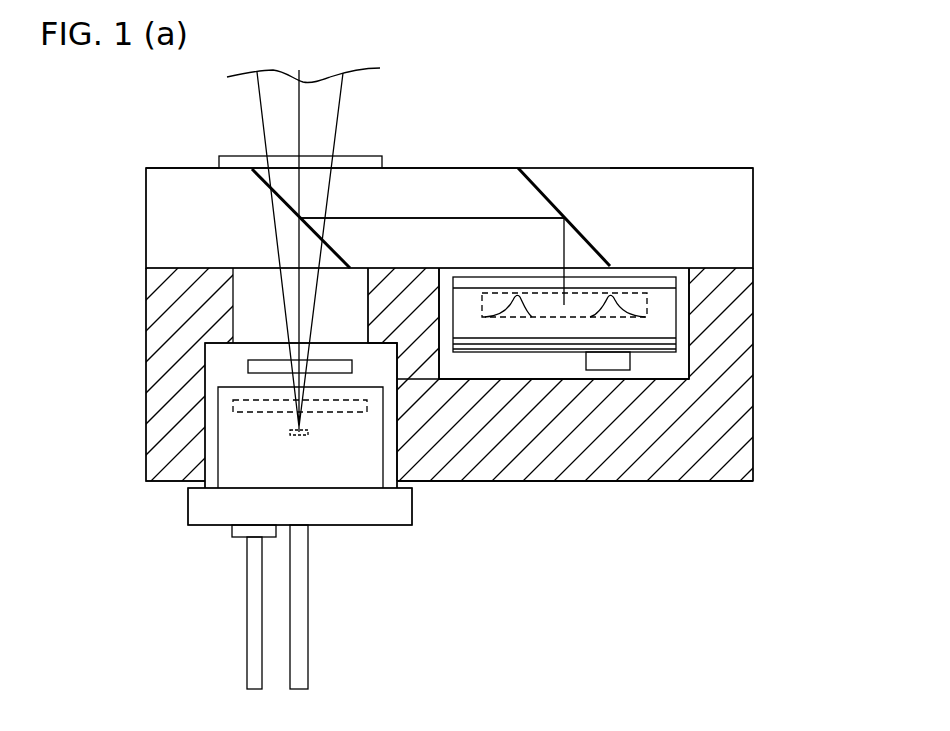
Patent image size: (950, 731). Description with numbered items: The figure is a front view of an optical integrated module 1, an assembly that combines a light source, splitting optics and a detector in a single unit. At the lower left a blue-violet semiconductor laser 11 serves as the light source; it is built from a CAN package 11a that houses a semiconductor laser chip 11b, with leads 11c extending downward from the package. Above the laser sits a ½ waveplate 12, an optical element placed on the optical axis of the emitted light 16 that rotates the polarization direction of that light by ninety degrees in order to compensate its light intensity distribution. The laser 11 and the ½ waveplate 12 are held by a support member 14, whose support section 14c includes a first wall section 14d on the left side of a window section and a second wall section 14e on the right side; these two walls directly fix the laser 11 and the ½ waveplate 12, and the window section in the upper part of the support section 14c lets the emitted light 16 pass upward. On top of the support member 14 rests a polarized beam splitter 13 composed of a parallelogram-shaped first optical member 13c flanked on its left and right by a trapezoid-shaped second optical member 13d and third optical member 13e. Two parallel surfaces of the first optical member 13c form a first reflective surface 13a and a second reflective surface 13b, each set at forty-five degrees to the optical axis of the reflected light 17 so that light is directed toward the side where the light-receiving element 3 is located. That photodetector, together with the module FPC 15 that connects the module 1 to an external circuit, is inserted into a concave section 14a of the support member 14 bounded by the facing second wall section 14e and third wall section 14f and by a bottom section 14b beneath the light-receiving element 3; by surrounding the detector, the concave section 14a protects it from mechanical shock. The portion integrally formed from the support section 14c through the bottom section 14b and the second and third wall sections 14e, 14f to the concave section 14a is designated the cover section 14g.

The optical integrated module 1 is at (709, 75).
The light-receiving element 3 is at (677, 302).
The blue-violet semiconductor laser 11 is at (190, 556).
The CAN package 11a is at (233, 468).
The semiconductor laser chip 11b is at (300, 437).
The leads 11c is at (247, 638).
The ½ waveplate 12 is at (330, 374).
The polarized beam splitter 13 is at (146, 240).
The first reflective surface 13a is at (283, 213).
The second reflective surface 13b is at (562, 207).
The first optical member 13c is at (423, 193).
The second optical member 13d is at (180, 193).
The third optical member 13e is at (692, 190).
The support member 14 is at (146, 302).
The concave section 14a is at (682, 365).
The bottom section 14b is at (597, 427).
The support section 14c is at (387, 415).
The first wall section 14d is at (163, 373).
The second wall section 14e is at (415, 333).
The third wall section 14f is at (725, 345).
The cover section 14g is at (478, 533).
The module FPC 15 is at (677, 342).
The emitted light 16 is at (301, 92).
The reflected light 17 is at (473, 218).